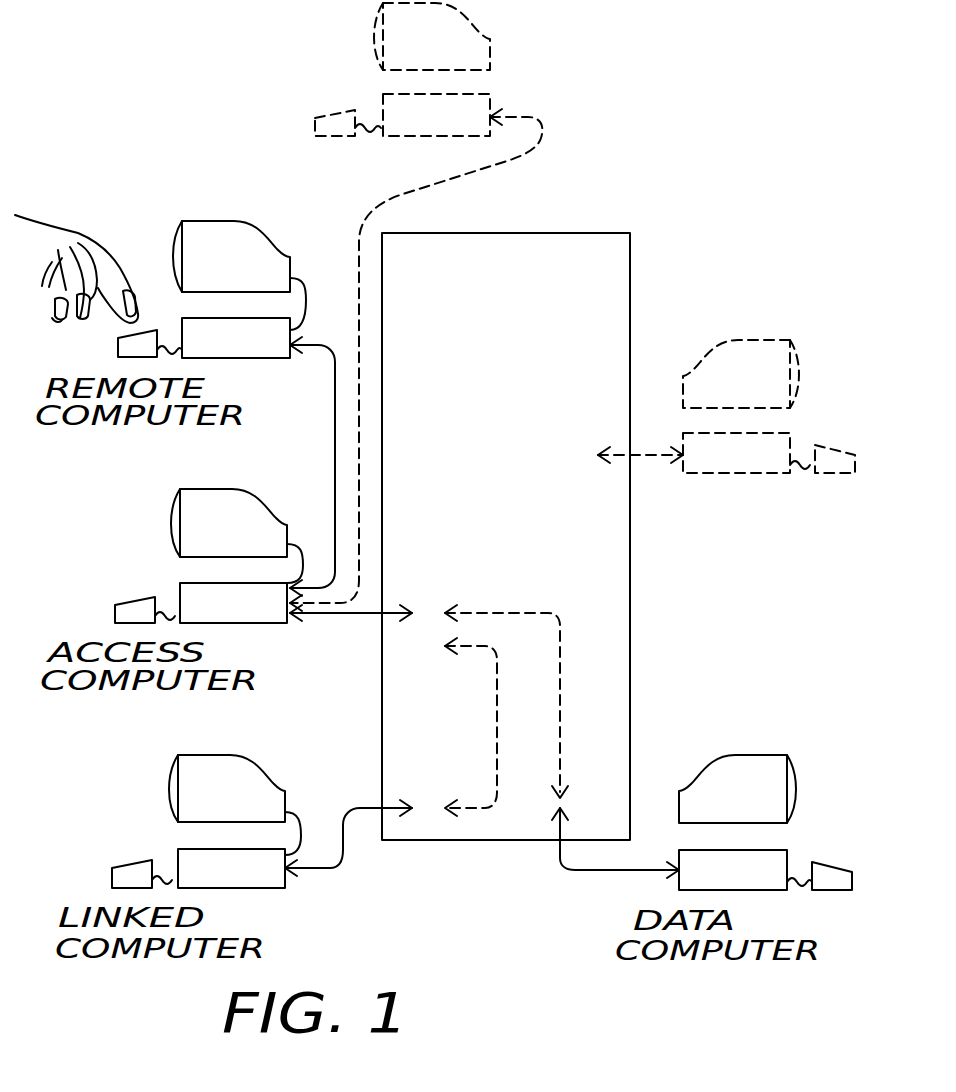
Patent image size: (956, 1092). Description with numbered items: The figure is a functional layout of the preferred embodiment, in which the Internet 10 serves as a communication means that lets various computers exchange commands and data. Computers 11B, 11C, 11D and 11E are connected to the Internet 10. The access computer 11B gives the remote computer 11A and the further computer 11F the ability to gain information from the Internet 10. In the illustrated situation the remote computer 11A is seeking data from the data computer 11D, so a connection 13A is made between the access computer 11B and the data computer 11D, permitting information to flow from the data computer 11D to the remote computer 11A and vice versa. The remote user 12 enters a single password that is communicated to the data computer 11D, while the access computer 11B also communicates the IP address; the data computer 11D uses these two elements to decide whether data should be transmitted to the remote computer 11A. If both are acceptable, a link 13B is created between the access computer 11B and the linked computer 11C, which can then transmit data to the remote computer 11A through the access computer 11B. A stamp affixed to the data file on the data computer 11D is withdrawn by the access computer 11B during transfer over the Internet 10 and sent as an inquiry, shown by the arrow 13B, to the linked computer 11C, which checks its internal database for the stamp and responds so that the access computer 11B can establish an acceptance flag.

The Internet 10 is at (610, 264).
The remote computer 11A is at (243, 250).
The access computer 11B is at (235, 520).
The linked computer 11C is at (238, 783).
The data computer 11D is at (750, 775).
The computer 11E is at (755, 363).
The computer 11F is at (450, 53).
The remote user 12 is at (98, 258).
The connection 13A is at (523, 579).
The link 13B is at (415, 716).